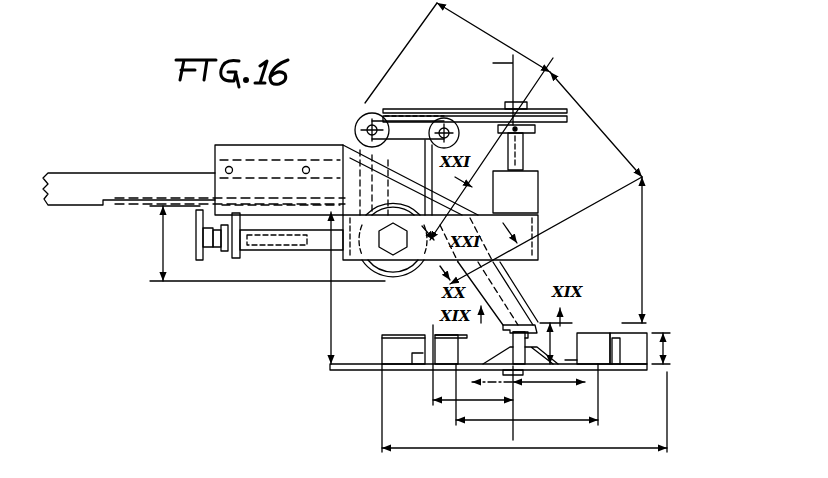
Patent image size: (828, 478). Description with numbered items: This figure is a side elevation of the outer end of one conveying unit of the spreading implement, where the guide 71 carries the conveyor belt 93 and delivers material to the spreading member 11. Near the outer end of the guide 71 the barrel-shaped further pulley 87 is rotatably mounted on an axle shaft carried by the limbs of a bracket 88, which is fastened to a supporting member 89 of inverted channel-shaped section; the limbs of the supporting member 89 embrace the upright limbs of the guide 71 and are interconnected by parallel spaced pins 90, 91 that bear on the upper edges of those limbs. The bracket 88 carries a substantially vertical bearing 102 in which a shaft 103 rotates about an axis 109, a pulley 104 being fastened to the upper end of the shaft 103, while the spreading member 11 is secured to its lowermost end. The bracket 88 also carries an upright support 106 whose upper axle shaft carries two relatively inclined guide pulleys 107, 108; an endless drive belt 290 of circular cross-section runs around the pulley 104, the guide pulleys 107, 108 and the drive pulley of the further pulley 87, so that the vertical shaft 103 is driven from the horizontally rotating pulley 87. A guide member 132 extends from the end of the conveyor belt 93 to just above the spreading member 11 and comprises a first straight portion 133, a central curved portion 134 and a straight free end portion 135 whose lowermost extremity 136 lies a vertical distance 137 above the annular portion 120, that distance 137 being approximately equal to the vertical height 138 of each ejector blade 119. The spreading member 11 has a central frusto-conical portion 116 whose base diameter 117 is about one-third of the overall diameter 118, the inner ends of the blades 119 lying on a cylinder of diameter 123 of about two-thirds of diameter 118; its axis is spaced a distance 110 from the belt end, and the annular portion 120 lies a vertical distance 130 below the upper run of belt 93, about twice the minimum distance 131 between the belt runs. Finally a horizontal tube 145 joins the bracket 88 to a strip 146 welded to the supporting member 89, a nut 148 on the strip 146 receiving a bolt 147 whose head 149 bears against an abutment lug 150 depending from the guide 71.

The guide 71 is at (62, 175).
The conveyor belt 93 is at (135, 196).
The supporting member 89 is at (215, 150).
The pin 90 is at (232, 167).
The pin 91 is at (306, 166).
The guide pulley 107 is at (360, 117).
The guide pulley 108 is at (457, 130).
The endless drive belt 290 is at (402, 112).
The upright support 106 is at (413, 128).
The axis of rotation 109 is at (487, 90).
The shaft 103 is at (520, 108).
The pulley 104 is at (524, 160).
The bearing 102 is at (540, 185).
The first straight portion 133 is at (498, 40).
The central curved portion 134 is at (613, 142).
The straight free end portion 135 is at (646, 271).
The further pulley 87 is at (393, 268).
The bracket 88 is at (535, 258).
The guide member 132 is at (528, 295).
The abutment lug 150 is at (194, 240).
The head 149 is at (205, 256).
The nut 148 is at (215, 256).
The bolt 147 is at (224, 256).
The strip 146 is at (230, 255).
The tube 145 is at (313, 252).
The minimum distance 131 is at (158, 223).
The vertical distance 130 is at (330, 304).
The annular portion 120 is at (378, 370).
The ejector blade 119 is at (398, 343).
The lowermost extremity 136 is at (510, 334).
The frusto-conical portion 116 is at (484, 366).
The vertical distance 137 is at (551, 343).
The spreading member 11 is at (650, 332).
The vertical height 138 is at (672, 346).
The distance 110 is at (447, 400).
The diameter 117 is at (543, 385).
The diameter 123 is at (498, 428).
The overall diameter 118 is at (553, 447).